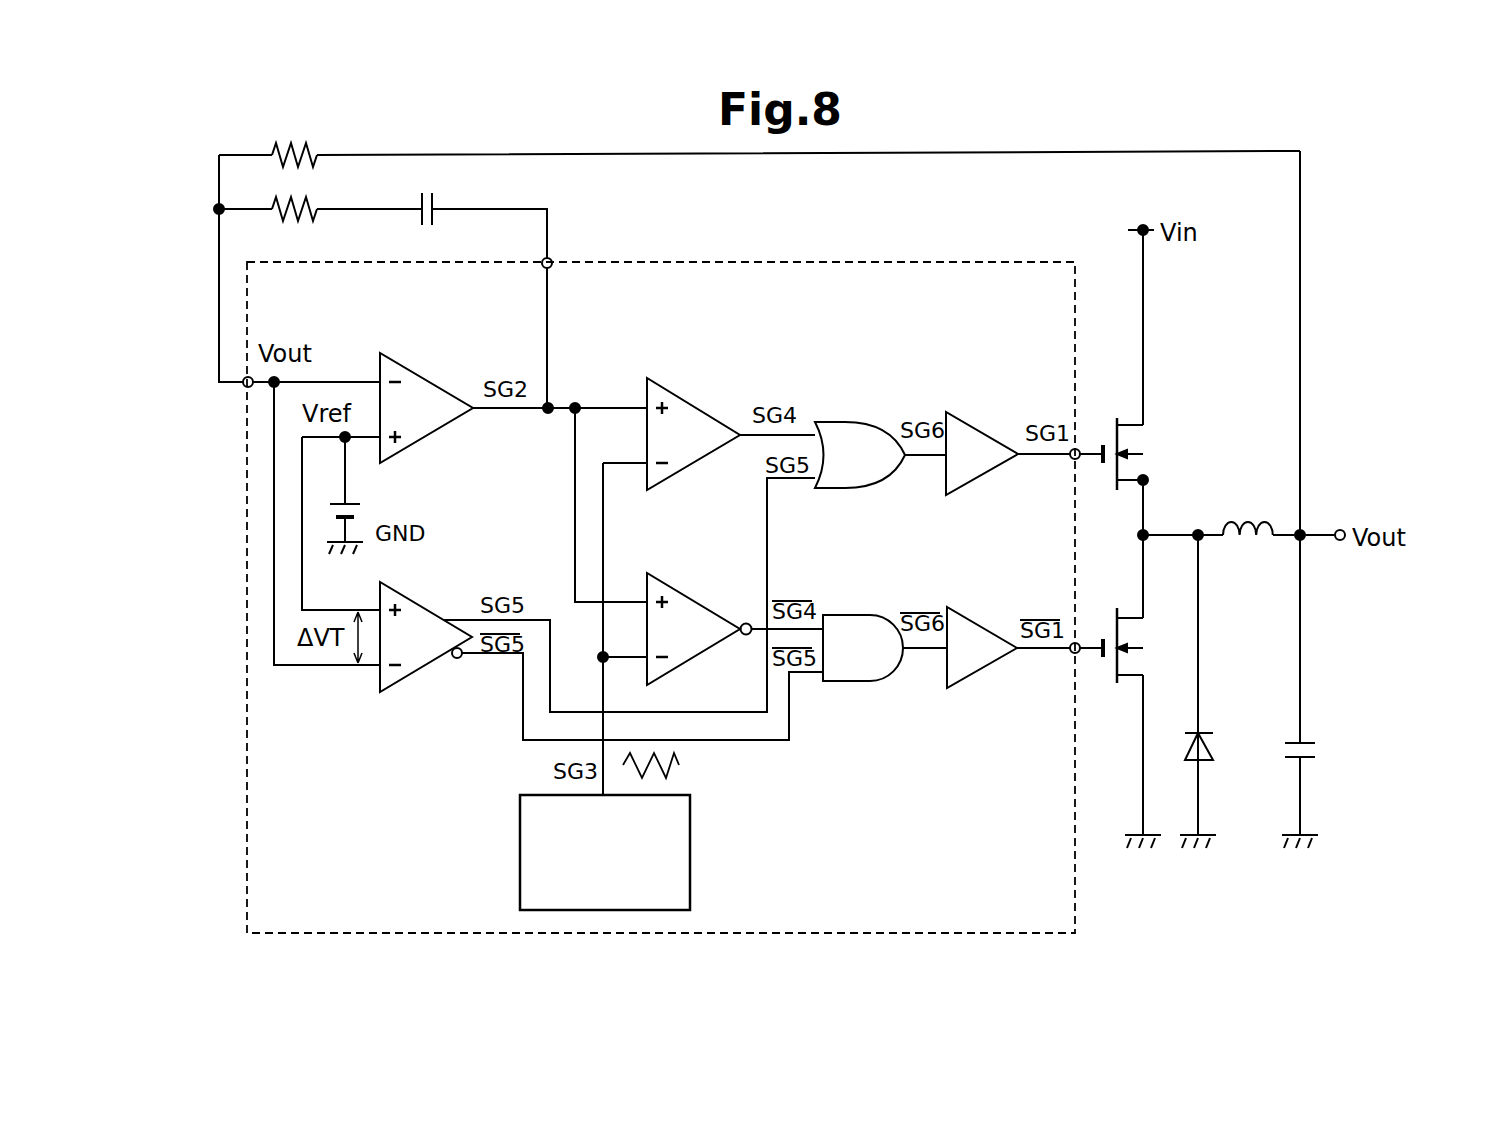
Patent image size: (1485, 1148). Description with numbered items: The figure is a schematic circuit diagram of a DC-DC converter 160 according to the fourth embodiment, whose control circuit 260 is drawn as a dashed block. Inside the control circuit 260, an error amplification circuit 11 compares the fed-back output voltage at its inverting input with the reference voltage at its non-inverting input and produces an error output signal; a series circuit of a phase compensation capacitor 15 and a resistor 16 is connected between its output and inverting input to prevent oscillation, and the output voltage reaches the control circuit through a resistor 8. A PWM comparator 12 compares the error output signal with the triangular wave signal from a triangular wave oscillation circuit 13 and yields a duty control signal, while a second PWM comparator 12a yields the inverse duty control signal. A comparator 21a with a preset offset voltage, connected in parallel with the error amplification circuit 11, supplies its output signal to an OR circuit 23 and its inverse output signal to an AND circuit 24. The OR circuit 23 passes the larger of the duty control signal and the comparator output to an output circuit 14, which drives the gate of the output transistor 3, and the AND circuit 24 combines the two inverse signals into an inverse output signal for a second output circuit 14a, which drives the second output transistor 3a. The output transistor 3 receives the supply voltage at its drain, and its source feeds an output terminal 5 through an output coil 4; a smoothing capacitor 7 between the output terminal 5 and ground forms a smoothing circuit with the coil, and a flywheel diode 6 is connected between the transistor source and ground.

The resistor 8 is at (291, 144).
The resistor 16 is at (291, 198).
The phase compensation capacitor 15 is at (434, 196).
The control circuit 260 is at (930, 262).
The error amplification circuit 11 is at (432, 440).
The comparator 21a is at (425, 609).
The PWM comparator 12 is at (700, 410).
The second PWM comparator 12a is at (712, 585).
The OR circuit 23 is at (833, 422).
The AND circuit 24 is at (835, 615).
The output circuit 14 is at (990, 470).
The second output circuit 14a is at (990, 665).
The triangular wave oscillation circuit 13 is at (690, 820).
The output transistor 3 is at (1114, 427).
The second output transistor 3a is at (1114, 625).
The output coil 4 is at (1255, 522).
The output terminal 5 is at (1341, 526).
The flywheel diode 6 is at (1213, 746).
The smoothing capacitor 7 is at (1315, 748).
The DC-DC converter 160 is at (1357, 855).